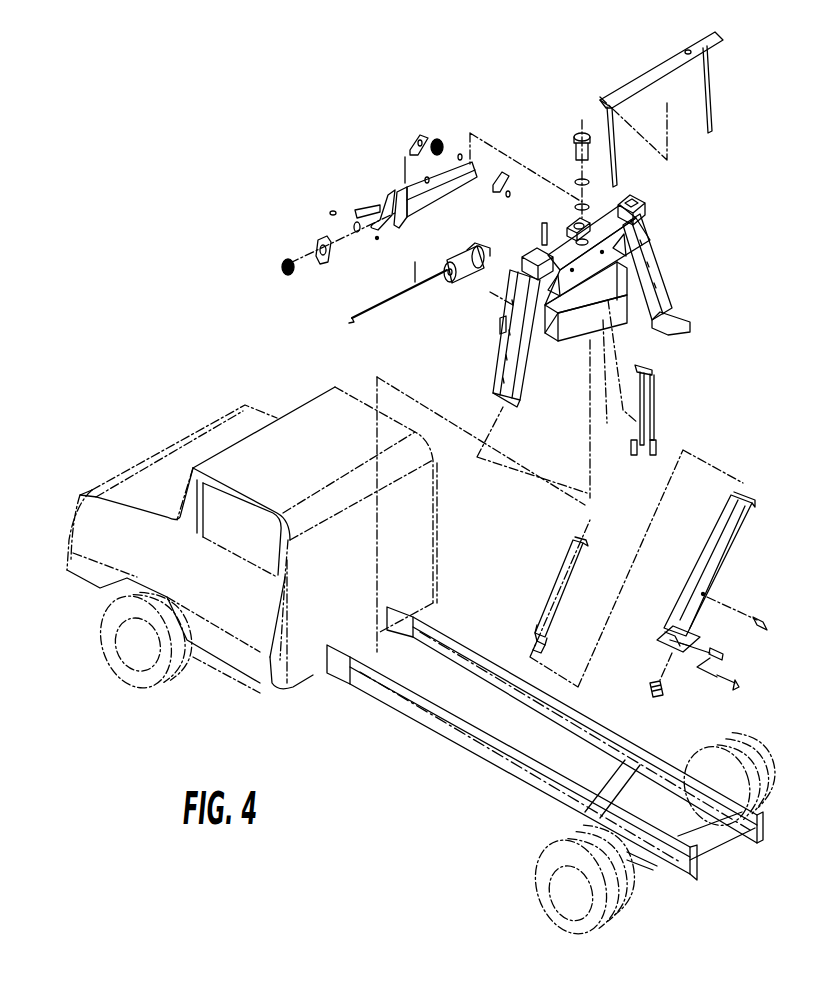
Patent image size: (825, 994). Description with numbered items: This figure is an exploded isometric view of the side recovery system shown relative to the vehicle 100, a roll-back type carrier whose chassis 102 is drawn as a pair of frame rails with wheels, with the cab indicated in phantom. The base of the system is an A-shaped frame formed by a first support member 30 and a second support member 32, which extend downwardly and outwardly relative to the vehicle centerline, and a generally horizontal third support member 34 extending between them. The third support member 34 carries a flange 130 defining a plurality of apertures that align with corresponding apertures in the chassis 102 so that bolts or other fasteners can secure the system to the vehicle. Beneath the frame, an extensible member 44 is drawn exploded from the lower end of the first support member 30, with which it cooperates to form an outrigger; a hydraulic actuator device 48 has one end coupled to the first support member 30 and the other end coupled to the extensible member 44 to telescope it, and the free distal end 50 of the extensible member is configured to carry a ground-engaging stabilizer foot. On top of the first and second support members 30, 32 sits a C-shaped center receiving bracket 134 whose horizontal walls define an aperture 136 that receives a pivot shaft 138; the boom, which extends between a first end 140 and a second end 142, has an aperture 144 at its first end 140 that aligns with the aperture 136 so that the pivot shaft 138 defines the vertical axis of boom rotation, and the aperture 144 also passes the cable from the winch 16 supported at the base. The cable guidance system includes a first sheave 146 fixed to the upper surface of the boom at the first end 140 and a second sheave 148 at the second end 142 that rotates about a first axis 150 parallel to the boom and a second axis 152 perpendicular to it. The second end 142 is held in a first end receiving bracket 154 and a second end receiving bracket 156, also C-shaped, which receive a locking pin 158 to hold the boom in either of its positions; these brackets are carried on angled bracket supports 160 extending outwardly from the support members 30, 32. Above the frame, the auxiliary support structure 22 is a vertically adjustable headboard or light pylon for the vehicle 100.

The winch 16 is at (440, 277).
The auxiliary support structure 22 is at (710, 77).
The first support member 30 is at (510, 358).
The second support member 32 is at (647, 295).
The third support member 34 is at (593, 315).
The extensible member 44 is at (733, 533).
The actuator device 48 is at (555, 590).
The distal end 50 is at (692, 603).
The vehicle 100 is at (173, 400).
The chassis 102 is at (430, 722).
The flange 130 is at (563, 320).
The center receiving bracket 134 is at (600, 215).
The aperture 136 is at (572, 220).
The pivot shaft 138 is at (570, 132).
The first end 140 is at (472, 170).
The second end 142 is at (357, 220).
The aperture 144 is at (468, 165).
The first sheave 146 is at (428, 138).
The second sheave 148 is at (325, 270).
The first axis 150 is at (387, 200).
The second axis 152 is at (377, 238).
The first end receiving bracket 154 is at (527, 248).
The second end receiving bracket 156 is at (650, 208).
The locking pin 158 is at (533, 232).
The bracket supports 160 is at (635, 222).